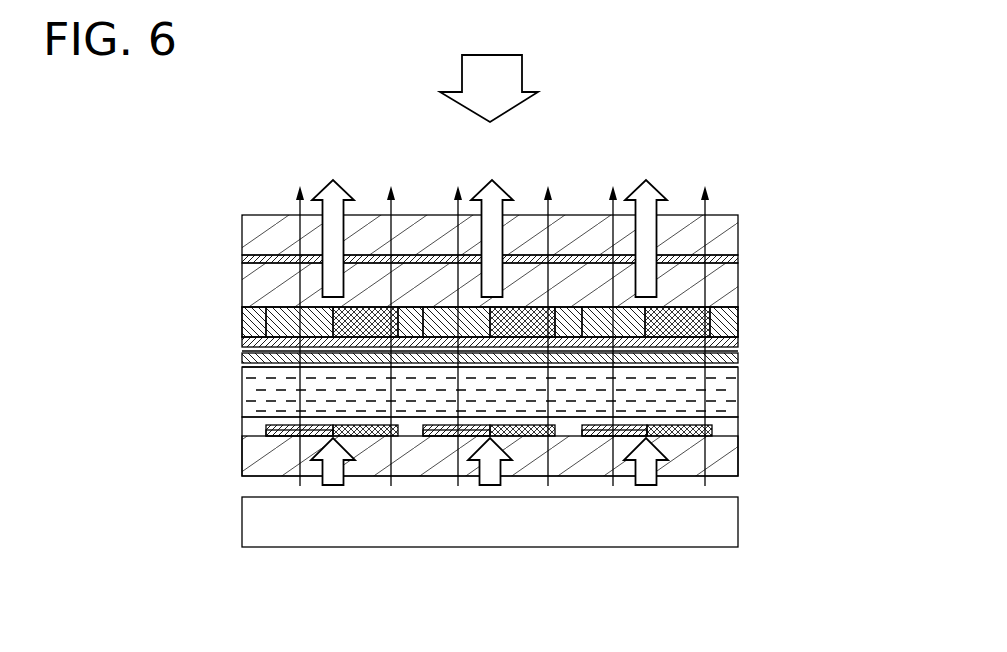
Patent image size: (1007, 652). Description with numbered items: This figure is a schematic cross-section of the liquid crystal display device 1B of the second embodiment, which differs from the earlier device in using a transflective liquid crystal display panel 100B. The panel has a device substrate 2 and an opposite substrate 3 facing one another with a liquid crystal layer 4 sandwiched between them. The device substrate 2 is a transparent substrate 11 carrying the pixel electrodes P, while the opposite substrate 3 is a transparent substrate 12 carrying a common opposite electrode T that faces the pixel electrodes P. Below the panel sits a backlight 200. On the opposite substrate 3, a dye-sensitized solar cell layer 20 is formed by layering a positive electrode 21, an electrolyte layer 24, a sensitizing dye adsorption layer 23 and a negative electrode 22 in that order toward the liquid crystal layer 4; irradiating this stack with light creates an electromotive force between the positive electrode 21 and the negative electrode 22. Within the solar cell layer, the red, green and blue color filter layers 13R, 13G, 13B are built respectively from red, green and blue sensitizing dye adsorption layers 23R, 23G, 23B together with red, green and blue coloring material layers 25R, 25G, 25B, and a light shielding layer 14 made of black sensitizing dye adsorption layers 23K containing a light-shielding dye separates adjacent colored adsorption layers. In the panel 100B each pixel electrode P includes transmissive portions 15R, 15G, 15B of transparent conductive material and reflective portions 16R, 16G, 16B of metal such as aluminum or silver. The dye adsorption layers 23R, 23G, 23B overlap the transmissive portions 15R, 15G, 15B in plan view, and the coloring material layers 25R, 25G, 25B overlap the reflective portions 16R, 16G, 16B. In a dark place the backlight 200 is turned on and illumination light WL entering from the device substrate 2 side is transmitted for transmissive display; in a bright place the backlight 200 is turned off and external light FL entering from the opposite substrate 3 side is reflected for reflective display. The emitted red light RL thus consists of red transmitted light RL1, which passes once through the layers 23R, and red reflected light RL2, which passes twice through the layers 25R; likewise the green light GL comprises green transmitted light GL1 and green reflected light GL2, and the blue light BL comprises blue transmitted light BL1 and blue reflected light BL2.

The liquid crystal display device 1B is at (707, 106).
The transflective liquid crystal display panel 100B is at (234, 322).
The opposite substrate 3 is at (234, 242).
The device substrate 2 is at (233, 458).
The liquid crystal layer 4 is at (243, 392).
The transparent substrate 12 is at (738, 234).
The positive electrode 21 is at (738, 259).
The electrolyte layer 24 is at (738, 285).
The sensitizing dye adsorption layer 23 is at (748, 322).
The negative electrode 22 is at (738, 342).
The dye-sensitized solar cell layer 20 is at (810, 252).
The opposite electrode T is at (738, 358).
The transparent substrate 11 is at (738, 455).
The backlight 200 is at (738, 517).
The external light FL is at (523, 82).
The red light RL is at (321, 190).
The green light GL is at (478, 197).
The blue light BL is at (660, 190).
The red transmitted light RL1 is at (297, 232).
The red reflected light RL2 is at (390, 212).
The green transmitted light GL1 is at (456, 232).
The green reflected light GL2 is at (546, 232).
The blue transmitted light BL1 is at (611, 232).
The blue reflected light BL2 is at (709, 205).
The red sensitizing dye adsorption layer 23R is at (290, 316).
The green sensitizing dye adsorption layer 23G is at (430, 316).
The blue sensitizing dye adsorption layer 23B is at (607, 316).
The red coloring material layer 25R is at (372, 316).
The green coloring material layer 25G is at (533, 316).
The blue coloring material layer 25B is at (680, 316).
The light shielding layer 14 is at (412, 323).
The black sensitizing dye adsorption layer 23K is at (477, 466).
The red color filter layer 13R is at (285, 433).
The green color filter layer 13G is at (435, 424).
The blue color filter layer 13B is at (605, 430).
The red transmissive portion 15R is at (295, 432).
The green transmissive portion 15G is at (463, 430).
The blue transmissive portion 15B is at (600, 432).
The red reflective portion 16R is at (390, 433).
The green reflective portion 16G is at (537, 433).
The blue reflective portion 16B is at (698, 435).
The illumination light WL is at (347, 485).
The pixel electrode P is at (365, 447).